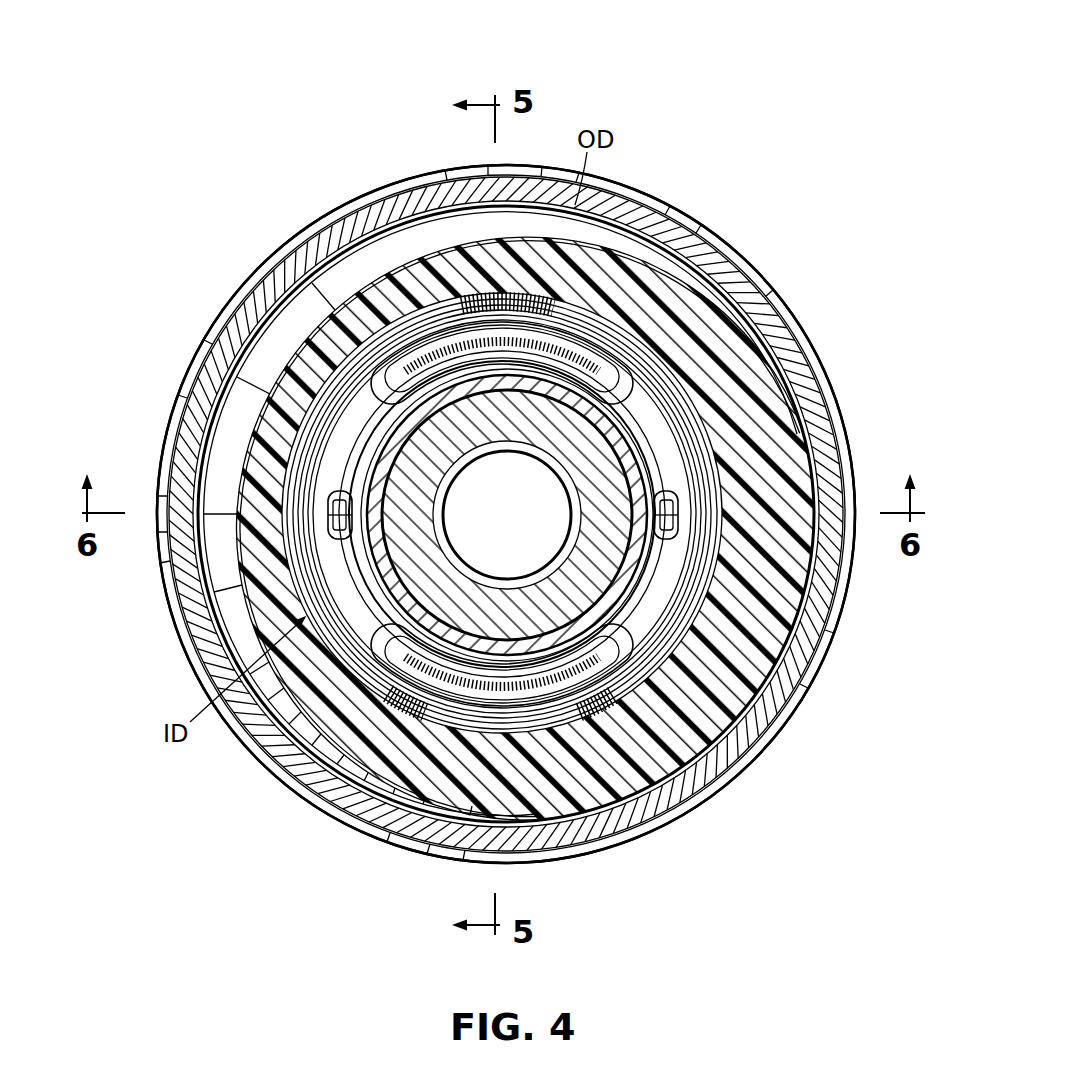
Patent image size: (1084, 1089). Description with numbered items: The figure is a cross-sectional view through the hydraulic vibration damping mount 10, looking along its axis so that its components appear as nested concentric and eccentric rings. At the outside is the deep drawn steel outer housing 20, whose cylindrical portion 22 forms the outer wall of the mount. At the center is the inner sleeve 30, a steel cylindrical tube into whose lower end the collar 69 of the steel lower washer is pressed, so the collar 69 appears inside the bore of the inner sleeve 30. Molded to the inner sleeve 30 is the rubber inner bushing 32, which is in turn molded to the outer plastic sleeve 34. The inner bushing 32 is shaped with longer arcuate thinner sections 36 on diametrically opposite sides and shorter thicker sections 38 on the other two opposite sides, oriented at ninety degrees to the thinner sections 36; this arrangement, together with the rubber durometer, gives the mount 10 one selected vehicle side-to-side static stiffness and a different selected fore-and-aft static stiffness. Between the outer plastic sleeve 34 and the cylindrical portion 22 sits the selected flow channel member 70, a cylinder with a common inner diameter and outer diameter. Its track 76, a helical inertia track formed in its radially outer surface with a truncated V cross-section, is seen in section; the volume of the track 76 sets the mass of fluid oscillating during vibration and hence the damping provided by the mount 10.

The hydraulic vibration damping mount 10 is at (815, 76).
The outer housing 20 is at (775, 750).
The cylindrical portion 22 is at (165, 597).
The inner sleeve 30 is at (427, 587).
The inner bushing 32 is at (673, 382).
The outer plastic sleeve 34 is at (712, 433).
The longer arcuate thinner sections 36 is at (563, 345).
The shorter thicker sections 38 is at (343, 513).
The collar 69 is at (463, 458).
The flow channel member 70 is at (362, 250).
The track 76 is at (256, 356).